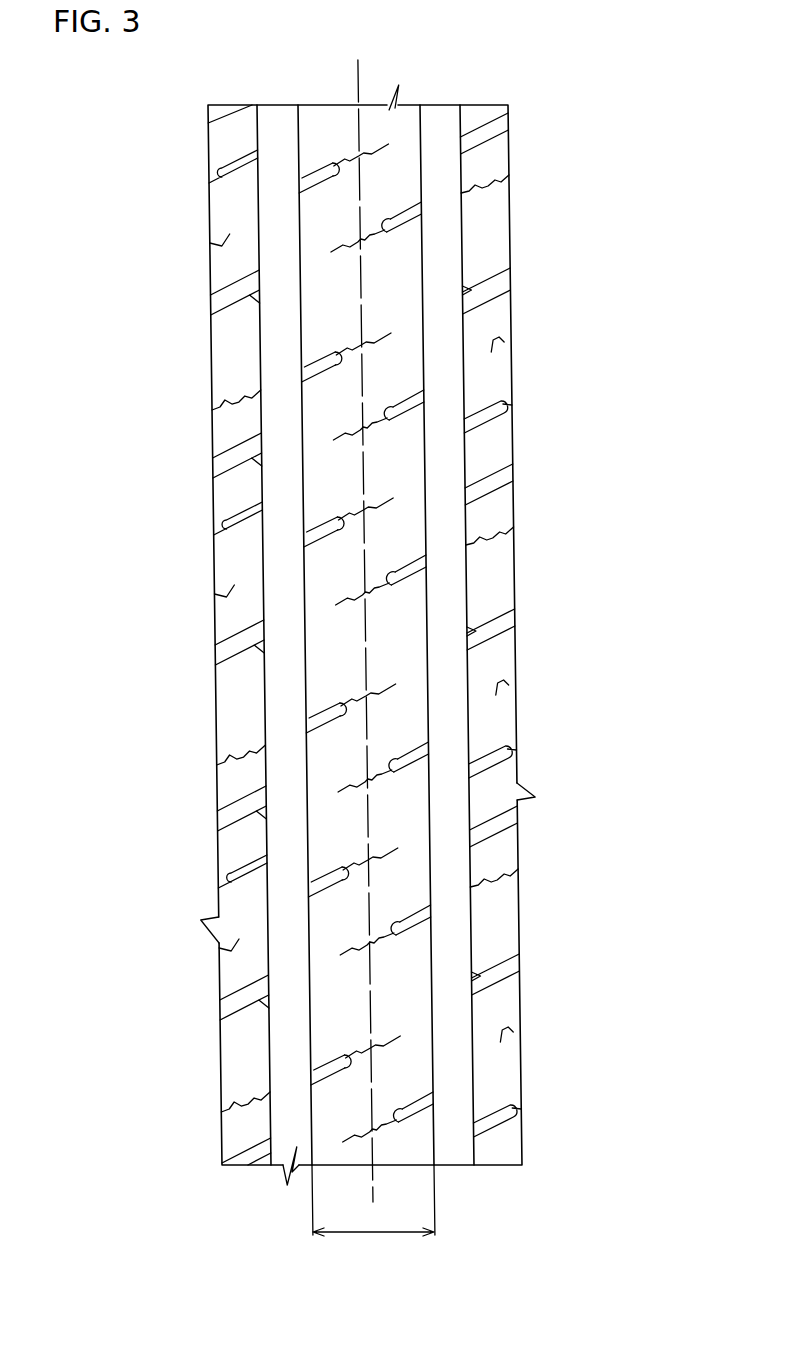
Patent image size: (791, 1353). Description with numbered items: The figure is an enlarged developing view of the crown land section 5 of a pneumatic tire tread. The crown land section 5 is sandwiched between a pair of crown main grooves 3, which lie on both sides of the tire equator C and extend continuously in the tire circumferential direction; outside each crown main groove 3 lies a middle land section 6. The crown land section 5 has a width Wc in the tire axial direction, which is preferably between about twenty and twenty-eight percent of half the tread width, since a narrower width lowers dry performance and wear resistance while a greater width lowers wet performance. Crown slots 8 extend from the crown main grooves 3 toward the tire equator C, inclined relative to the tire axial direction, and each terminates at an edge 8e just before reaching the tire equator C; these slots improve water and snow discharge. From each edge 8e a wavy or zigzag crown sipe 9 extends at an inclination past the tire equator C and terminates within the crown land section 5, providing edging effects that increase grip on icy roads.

The crown main groove 3 is at (264, 230).
The crown land section 5 is at (402, 163).
The middle land section 6 is at (221, 728).
The crown slot 8 is at (407, 405).
The edge of crown slot 8e is at (388, 415).
The crown sipe 9 is at (370, 423).
The tire equator C is at (360, 615).
The width of crown land section Wc is at (373, 1216).